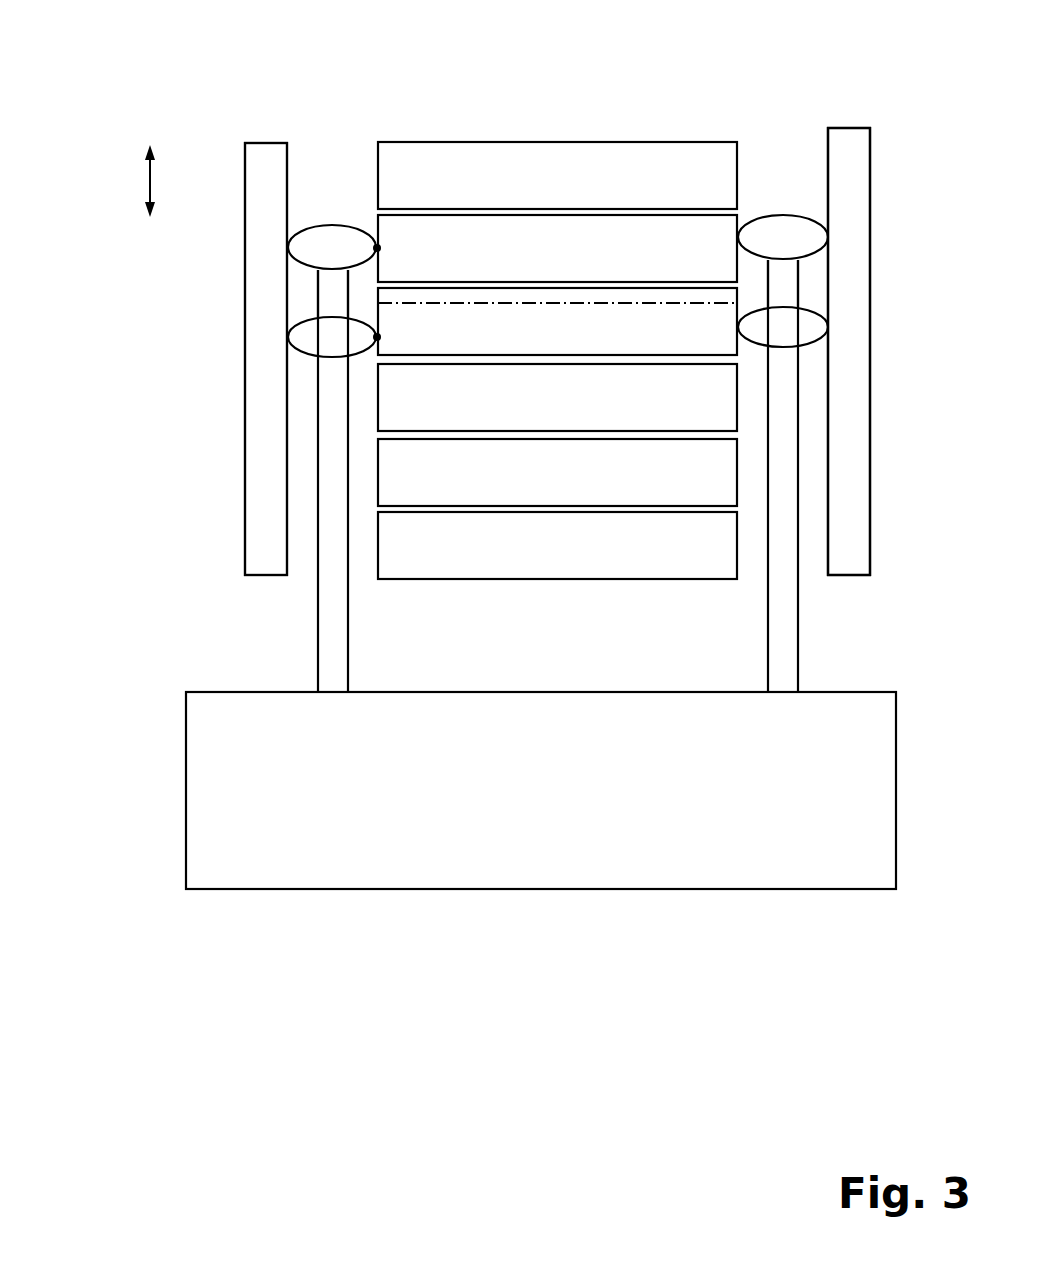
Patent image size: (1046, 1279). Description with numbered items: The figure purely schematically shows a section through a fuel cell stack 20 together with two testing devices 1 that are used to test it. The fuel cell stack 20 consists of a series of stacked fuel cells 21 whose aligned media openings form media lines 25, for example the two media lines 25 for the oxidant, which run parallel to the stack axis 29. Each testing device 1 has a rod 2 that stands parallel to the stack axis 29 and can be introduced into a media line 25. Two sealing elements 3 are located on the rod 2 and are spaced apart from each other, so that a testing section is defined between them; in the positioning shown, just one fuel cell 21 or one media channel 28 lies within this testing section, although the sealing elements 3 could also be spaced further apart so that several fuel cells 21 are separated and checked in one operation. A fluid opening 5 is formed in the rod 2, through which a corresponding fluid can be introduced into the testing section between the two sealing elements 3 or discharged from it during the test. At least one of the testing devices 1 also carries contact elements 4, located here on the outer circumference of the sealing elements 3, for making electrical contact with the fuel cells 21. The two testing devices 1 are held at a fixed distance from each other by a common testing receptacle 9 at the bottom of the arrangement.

The testing device 1 is at (280, 611).
The rod 2 is at (348, 643).
The sealing element 3 is at (313, 229).
The contact element 4 is at (372, 240).
The fluid opening 5 is at (347, 300).
The testing receptacle 9 is at (541, 889).
The fuel cell stack 20 is at (862, 102).
The fuel cell 21 is at (557, 360).
The media line 25 is at (318, 140).
The media channel 28 is at (639, 303).
The stack axis 29 is at (148, 181).